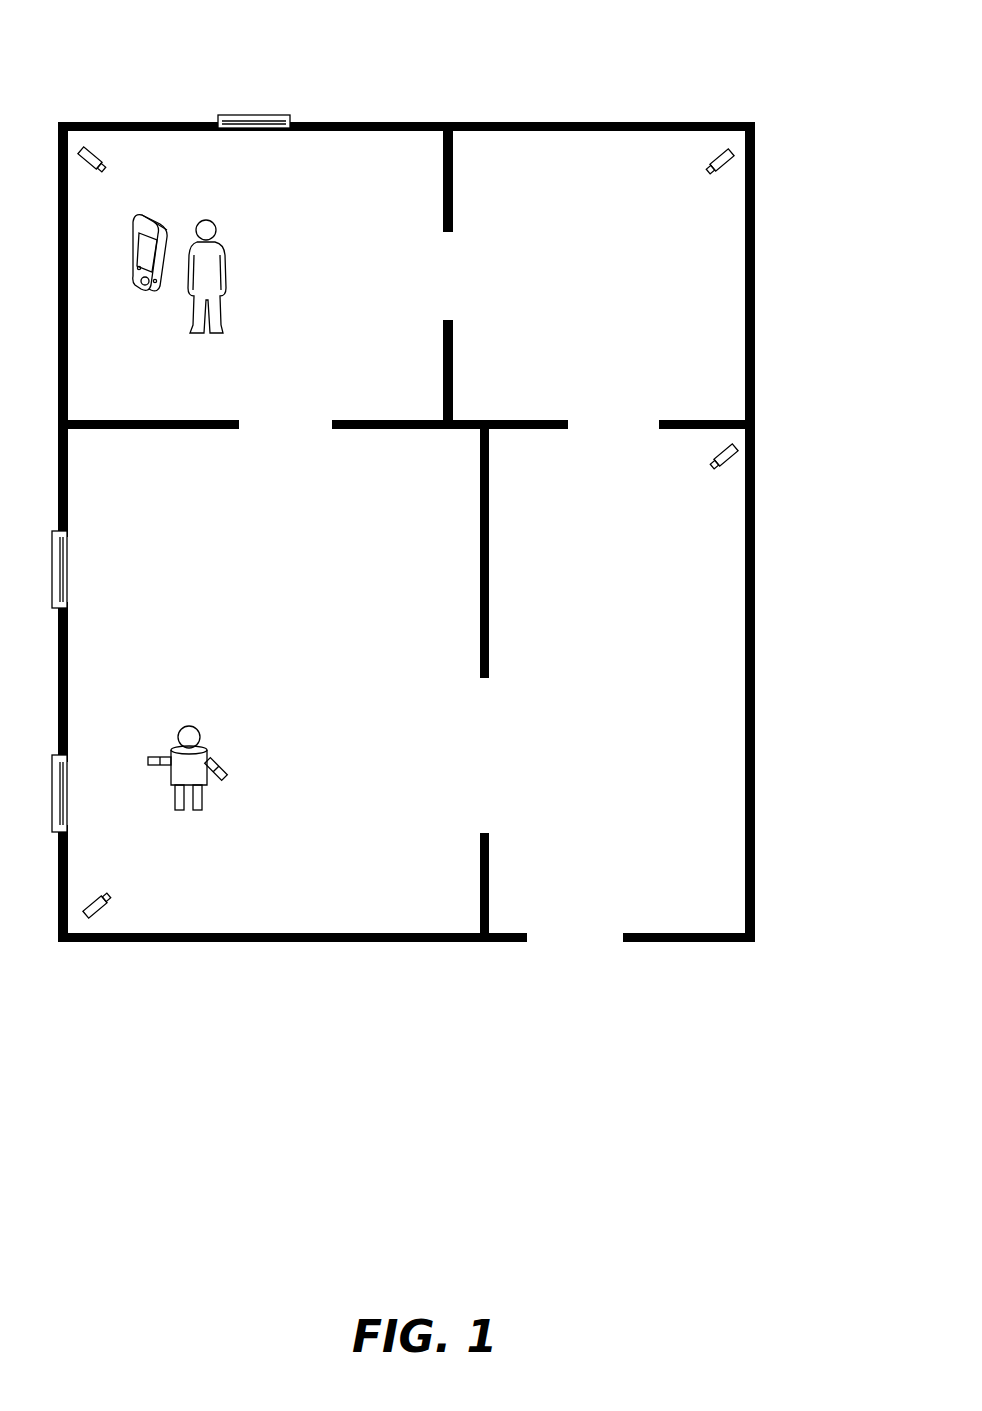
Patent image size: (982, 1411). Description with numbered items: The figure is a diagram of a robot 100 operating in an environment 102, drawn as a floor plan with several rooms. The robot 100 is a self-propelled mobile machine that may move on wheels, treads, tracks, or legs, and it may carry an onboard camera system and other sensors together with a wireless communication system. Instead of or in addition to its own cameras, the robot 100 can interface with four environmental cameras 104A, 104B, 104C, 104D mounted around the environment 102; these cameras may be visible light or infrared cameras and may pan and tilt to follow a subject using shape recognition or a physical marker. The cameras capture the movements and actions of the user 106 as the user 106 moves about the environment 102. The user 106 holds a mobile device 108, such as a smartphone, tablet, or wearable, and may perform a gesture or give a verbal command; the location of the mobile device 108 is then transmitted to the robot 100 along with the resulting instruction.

The robot 100 is at (210, 755).
The environment 102 is at (612, 53).
The camera 104A is at (98, 151).
The camera 104B is at (734, 152).
The camera 104C is at (110, 899).
The camera 104D is at (736, 447).
The user 106 is at (225, 247).
The mobile device 108 is at (155, 222).